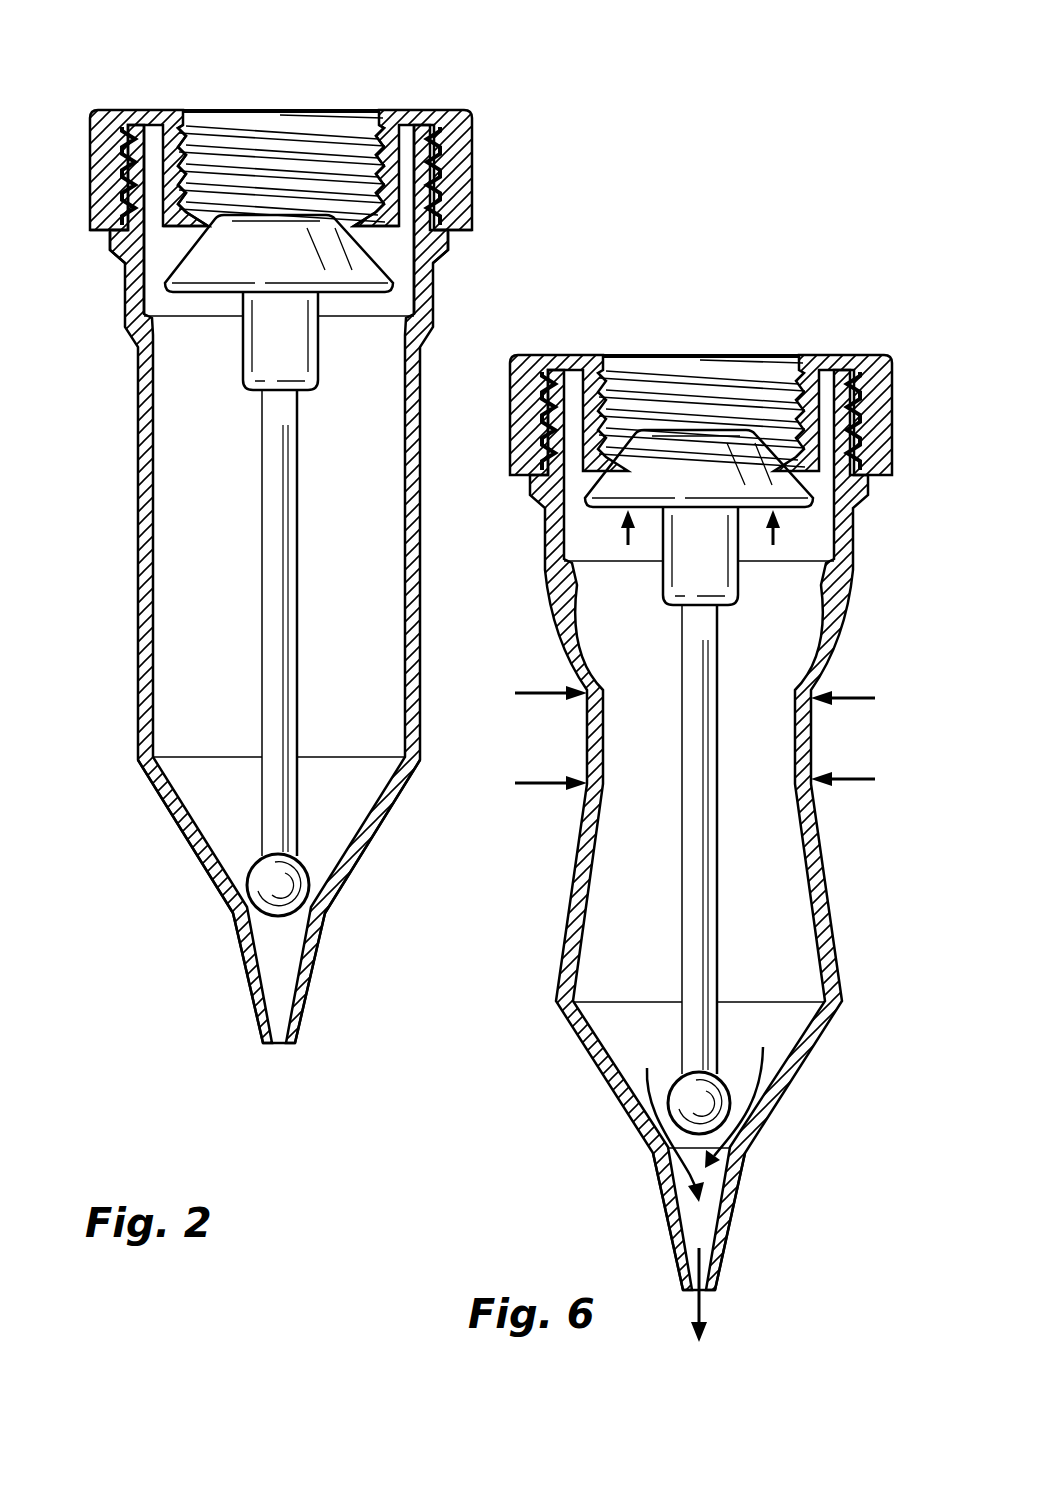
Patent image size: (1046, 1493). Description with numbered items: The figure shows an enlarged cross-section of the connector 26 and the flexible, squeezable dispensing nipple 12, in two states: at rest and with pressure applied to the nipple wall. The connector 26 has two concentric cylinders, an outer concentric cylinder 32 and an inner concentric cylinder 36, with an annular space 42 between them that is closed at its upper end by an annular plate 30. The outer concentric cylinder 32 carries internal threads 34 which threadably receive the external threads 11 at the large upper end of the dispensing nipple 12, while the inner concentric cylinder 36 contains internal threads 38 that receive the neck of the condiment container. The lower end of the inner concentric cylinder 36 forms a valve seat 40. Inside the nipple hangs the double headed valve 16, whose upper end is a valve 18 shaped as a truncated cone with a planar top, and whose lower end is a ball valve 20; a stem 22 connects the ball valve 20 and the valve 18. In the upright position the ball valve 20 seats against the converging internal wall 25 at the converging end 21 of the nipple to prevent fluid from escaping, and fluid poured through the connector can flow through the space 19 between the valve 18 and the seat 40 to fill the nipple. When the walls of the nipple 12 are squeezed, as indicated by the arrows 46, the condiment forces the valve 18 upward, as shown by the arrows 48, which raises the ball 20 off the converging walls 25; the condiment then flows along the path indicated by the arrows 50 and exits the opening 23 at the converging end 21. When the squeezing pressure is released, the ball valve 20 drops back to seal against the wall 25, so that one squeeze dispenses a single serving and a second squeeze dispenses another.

In FIG. 2, the external threads 11 is at (162, 120).
In FIG. 2, the dispensing nipple 12 is at (138, 423).
In FIG. 6, the dispensing nipple 12 is at (587, 753).
In FIG. 2, the double headed valve 16 is at (245, 542).
In FIG. 2, the valve 18 is at (220, 237).
In FIG. 6, the valve 18 is at (780, 473).
In FIG. 2, the space 19 is at (182, 235).
In FIG. 2, the ball valve 20 is at (267, 882).
In FIG. 6, the ball valve 20 is at (687, 1100).
In FIG. 2, the converging end 21 is at (250, 970).
In FIG. 6, the converging end 21 is at (742, 1185).
In FIG. 2, the stem 22 is at (263, 608).
In FIG. 6, the stem 22 is at (686, 805).
In FIG. 2, the opening 23 is at (282, 1045).
In FIG. 6, the opening 23 is at (705, 1293).
In FIG. 2, the internal wall 25 is at (342, 848).
In FIG. 2, the connector 26 is at (470, 110).
In FIG. 2, the annular plate 30 is at (125, 112).
In FIG. 2, the outer concentric cylinder 32 is at (93, 229).
In FIG. 2, the internal threads 34 is at (130, 178).
In FIG. 2, the inner concentric cylinder 36 is at (403, 128).
In FIG. 2, the internal threads 38 is at (385, 158).
In FIG. 2, the valve seat 40 is at (372, 235).
In FIG. 2, the annular space 42 is at (407, 185).
In FIG. 6, the arrows 46 is at (539, 690).
In FIG. 6, the arrows 48 is at (623, 532).
In FIG. 6, the arrows 50 is at (755, 1067).